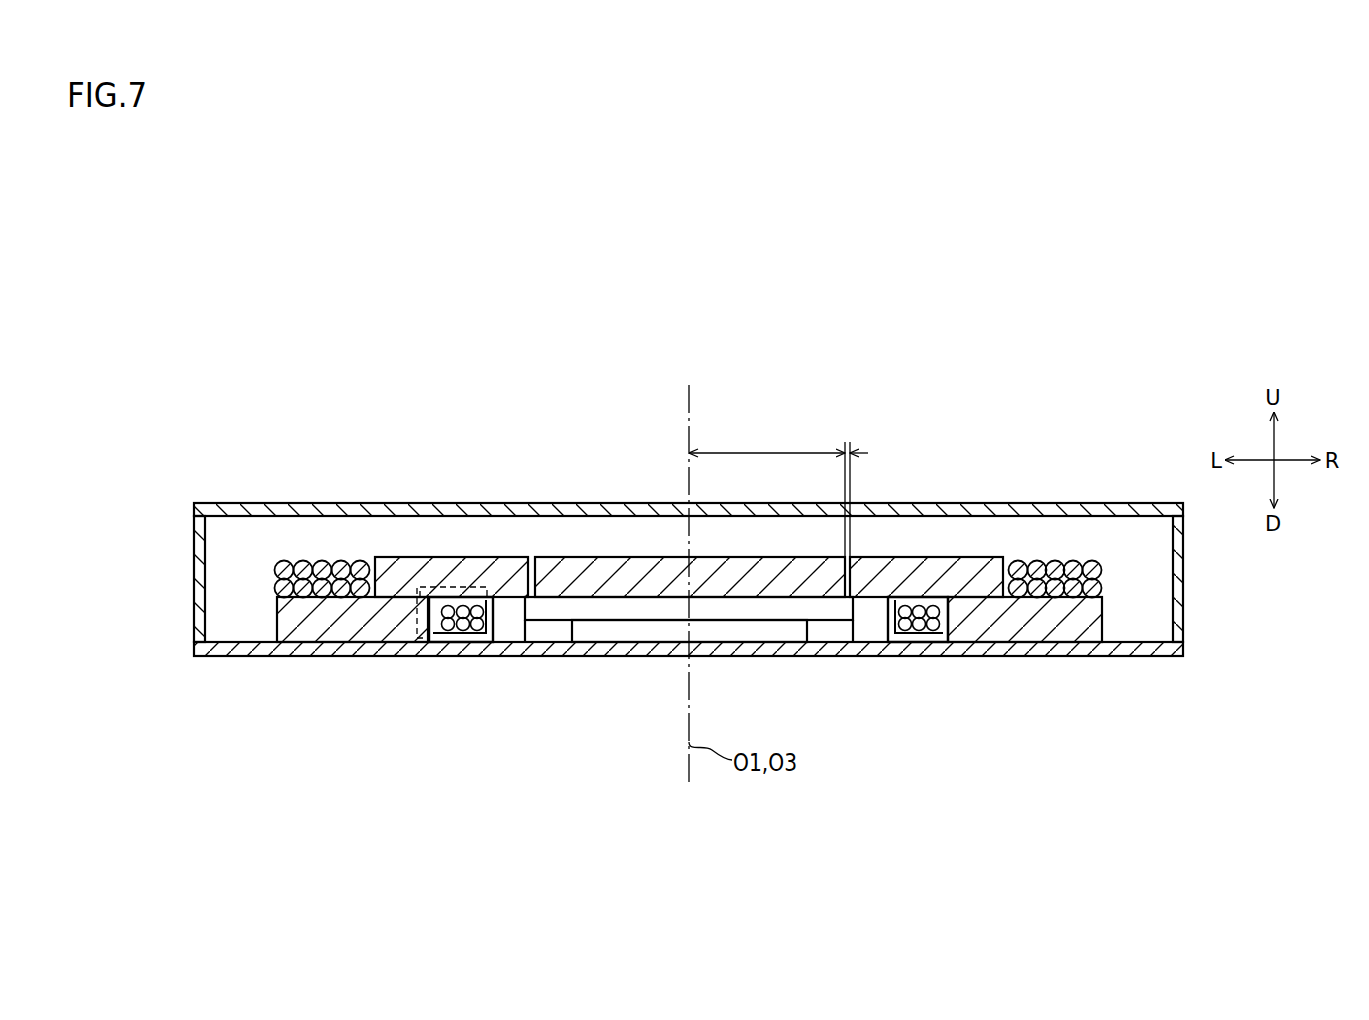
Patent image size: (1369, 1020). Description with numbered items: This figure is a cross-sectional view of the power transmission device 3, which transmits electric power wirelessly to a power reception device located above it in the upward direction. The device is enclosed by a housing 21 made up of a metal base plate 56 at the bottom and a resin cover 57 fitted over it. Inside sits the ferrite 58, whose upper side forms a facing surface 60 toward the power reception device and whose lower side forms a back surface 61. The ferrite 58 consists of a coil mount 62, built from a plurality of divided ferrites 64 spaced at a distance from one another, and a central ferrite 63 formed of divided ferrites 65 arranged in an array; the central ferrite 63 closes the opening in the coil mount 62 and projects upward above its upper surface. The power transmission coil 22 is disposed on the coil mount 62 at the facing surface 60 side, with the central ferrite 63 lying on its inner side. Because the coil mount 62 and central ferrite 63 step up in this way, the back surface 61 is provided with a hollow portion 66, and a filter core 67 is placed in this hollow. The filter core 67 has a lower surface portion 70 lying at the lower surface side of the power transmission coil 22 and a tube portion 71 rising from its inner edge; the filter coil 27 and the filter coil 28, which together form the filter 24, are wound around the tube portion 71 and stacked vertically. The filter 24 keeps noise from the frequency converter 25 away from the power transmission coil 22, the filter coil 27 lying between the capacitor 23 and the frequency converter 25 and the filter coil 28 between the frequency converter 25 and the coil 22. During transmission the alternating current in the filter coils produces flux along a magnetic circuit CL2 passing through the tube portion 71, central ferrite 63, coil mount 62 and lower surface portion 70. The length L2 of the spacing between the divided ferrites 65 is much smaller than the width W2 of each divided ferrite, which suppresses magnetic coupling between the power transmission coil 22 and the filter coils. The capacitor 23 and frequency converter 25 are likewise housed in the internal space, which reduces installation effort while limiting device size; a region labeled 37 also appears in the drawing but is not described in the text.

The power transmission device 3 is at (608, 452).
The housing 21 is at (1238, 595).
The power transmission coil 22 is at (1016, 598).
The capacitor 23 is at (630, 632).
The filter 24 is at (960, 735).
The frequency converter 25 is at (590, 607).
The filter coil 27 is at (905, 623).
The filter coil 28 is at (945, 614).
The gap 37 is at (527, 628).
The base plate 56 is at (1182, 651).
The resin cover 57 is at (1182, 601).
The ferrite 58 is at (333, 735).
The facing surface 60 is at (953, 550).
The back surface 61 is at (1072, 658).
The coil mount 62 is at (350, 615).
The central ferrite 63 is at (415, 578).
The divided ferrite 64 is at (1055, 612).
The divided ferrite 65 is at (988, 575).
The hollow portion 66 is at (834, 628).
The filter core 67 is at (433, 735).
The lower surface portion 70 is at (447, 624).
The tube portion 71 is at (491, 627).
The magnetic circuit CL2 is at (462, 587).
The width W2 is at (767, 436).
The length L2 is at (852, 488).